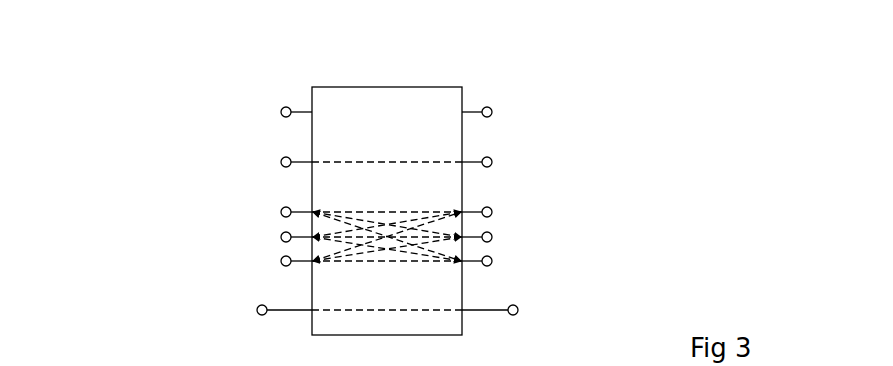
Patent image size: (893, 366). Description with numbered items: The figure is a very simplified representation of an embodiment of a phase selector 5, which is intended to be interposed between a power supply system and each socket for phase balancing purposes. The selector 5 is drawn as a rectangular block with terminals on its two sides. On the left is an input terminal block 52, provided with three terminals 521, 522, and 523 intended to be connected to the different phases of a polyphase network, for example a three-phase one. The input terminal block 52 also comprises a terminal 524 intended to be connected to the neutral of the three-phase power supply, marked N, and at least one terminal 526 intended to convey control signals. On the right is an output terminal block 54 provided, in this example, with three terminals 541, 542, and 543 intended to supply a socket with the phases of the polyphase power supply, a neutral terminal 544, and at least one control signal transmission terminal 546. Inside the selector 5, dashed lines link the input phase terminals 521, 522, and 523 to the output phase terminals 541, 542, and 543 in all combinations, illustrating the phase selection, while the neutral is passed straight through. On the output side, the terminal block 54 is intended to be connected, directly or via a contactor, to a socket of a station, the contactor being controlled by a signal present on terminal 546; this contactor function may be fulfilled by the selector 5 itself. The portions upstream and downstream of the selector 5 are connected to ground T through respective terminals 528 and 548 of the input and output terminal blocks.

The phase selector 5 is at (383, 87).
The input terminal block 52 is at (281, 96).
The output terminal block 54 is at (503, 83).
The terminal 521 is at (281, 211).
The terminal 522 is at (281, 236).
The terminal 523 is at (281, 260).
The terminal 524 is at (280, 158).
The terminal 526 is at (281, 111).
The terminal 528 is at (258, 306).
The terminal 541 is at (491, 210).
The terminal 542 is at (491, 234).
The terminal 543 is at (491, 258).
The neutral terminal 544 is at (491, 160).
The control signal transmission terminal 546 is at (491, 110).
The terminal 548 is at (517, 307).